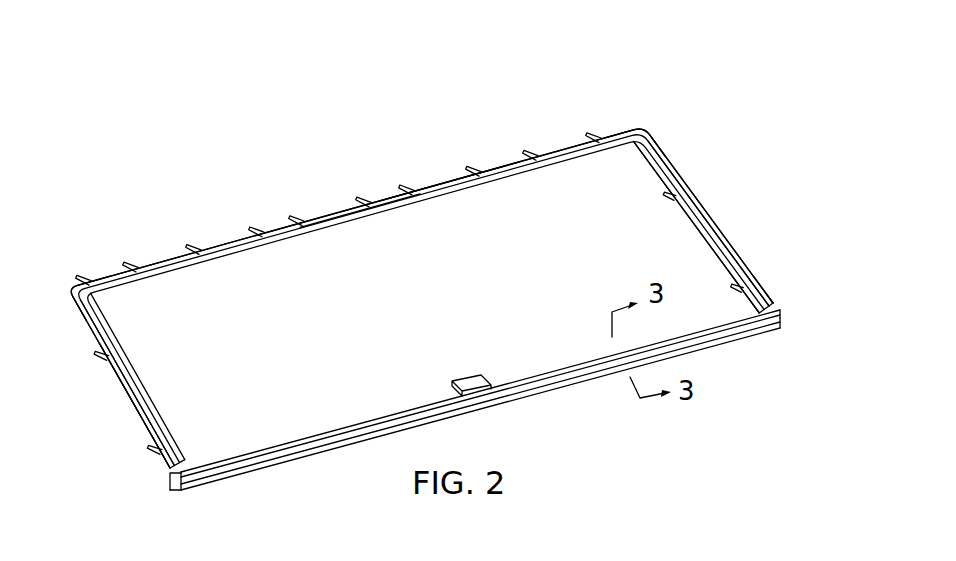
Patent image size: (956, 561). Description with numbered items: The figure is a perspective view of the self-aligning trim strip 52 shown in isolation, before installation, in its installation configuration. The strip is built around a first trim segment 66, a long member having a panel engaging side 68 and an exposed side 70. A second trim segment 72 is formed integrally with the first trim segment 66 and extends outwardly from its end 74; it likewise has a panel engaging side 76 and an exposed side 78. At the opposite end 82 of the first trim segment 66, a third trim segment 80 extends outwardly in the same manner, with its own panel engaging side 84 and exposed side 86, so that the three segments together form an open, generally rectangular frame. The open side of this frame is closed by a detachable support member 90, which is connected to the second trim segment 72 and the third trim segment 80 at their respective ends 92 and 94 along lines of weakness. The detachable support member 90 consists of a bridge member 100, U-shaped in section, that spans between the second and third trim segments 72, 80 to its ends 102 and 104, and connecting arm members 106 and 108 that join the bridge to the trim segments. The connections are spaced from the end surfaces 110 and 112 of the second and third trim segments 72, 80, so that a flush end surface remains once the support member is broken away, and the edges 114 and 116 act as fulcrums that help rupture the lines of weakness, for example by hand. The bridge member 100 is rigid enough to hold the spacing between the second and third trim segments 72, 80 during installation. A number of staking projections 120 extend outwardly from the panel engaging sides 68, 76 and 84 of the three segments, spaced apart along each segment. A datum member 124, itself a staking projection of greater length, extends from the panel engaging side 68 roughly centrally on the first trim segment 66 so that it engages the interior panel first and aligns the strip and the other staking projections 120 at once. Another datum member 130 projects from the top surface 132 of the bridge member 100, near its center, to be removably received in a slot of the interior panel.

The self-aligning trim strip 52 is at (579, 104).
The first trim segment 66 is at (445, 179).
The panel engaging side 68 is at (176, 246).
The exposed side 70 is at (350, 210).
The second trim segment 72 is at (134, 416).
The end 74 is at (80, 284).
The panel engaging side 76 is at (76, 342).
The exposed side 78 is at (141, 392).
The third trim segment 80 is at (721, 228).
The opposite end 82 is at (618, 133).
The panel engaging side 84 is at (699, 240).
The exposed side 86 is at (684, 180).
The detachable support member 90 is at (545, 390).
The end 92 is at (181, 447).
The end 94 is at (770, 290).
The bridge member 100 is at (300, 458).
The end 102 is at (181, 493).
The end 104 is at (772, 332).
The connecting arm member 106 is at (168, 482).
The connecting arm member 108 is at (782, 312).
The end surface 110 is at (190, 468).
The end surface 112 is at (775, 305).
The edge 114 is at (160, 470).
The edge 116 is at (746, 304).
The staking projections 120 is at (536, 150).
The datum member 124 is at (290, 216).
The datum member 130 is at (468, 381).
The top surface 132 is at (410, 413).